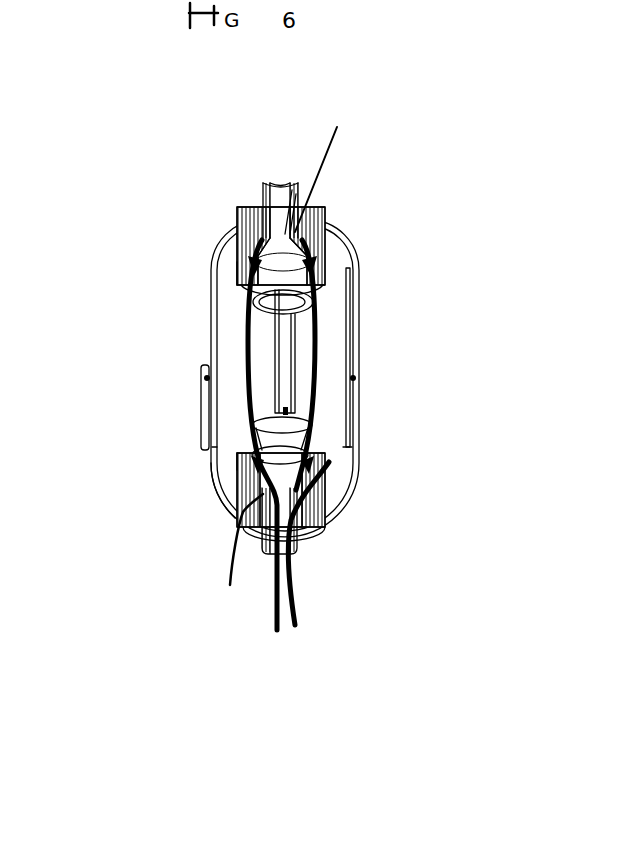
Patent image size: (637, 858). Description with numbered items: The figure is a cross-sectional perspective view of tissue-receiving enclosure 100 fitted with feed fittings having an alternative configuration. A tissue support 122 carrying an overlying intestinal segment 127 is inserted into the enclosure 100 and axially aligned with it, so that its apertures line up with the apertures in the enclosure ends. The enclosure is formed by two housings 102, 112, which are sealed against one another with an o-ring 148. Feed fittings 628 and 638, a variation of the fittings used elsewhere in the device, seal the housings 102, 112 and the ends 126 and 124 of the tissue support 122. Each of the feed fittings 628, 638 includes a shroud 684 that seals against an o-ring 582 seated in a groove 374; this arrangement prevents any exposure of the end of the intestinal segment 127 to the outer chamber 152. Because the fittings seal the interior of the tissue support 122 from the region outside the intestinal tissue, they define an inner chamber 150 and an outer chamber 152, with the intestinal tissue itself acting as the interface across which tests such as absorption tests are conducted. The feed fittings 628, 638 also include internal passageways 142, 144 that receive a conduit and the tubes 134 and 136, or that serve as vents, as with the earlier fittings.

The tissue-receiving enclosure 100 is at (117, 231).
The housing 102 is at (207, 301).
The housing 112 is at (201, 474).
The tissue support 122 is at (287, 377).
The aperture 124 is at (337, 171).
The aperture 126 is at (236, 555).
The intestinal segment 127 is at (320, 337).
The tube 134 is at (294, 593).
The tube 136 is at (270, 623).
The internal passageway 142 is at (288, 194).
The internal passageway 144 is at (318, 233).
The o-ring 148 is at (201, 368).
The inner chamber 150 is at (295, 352).
The outer chamber 152 is at (214, 339).
The groove 374 is at (270, 452).
The o-ring 582 is at (314, 270).
The feed fitting 628 is at (230, 517).
The feed fitting 638 is at (237, 217).
The shroud 684 is at (231, 264).